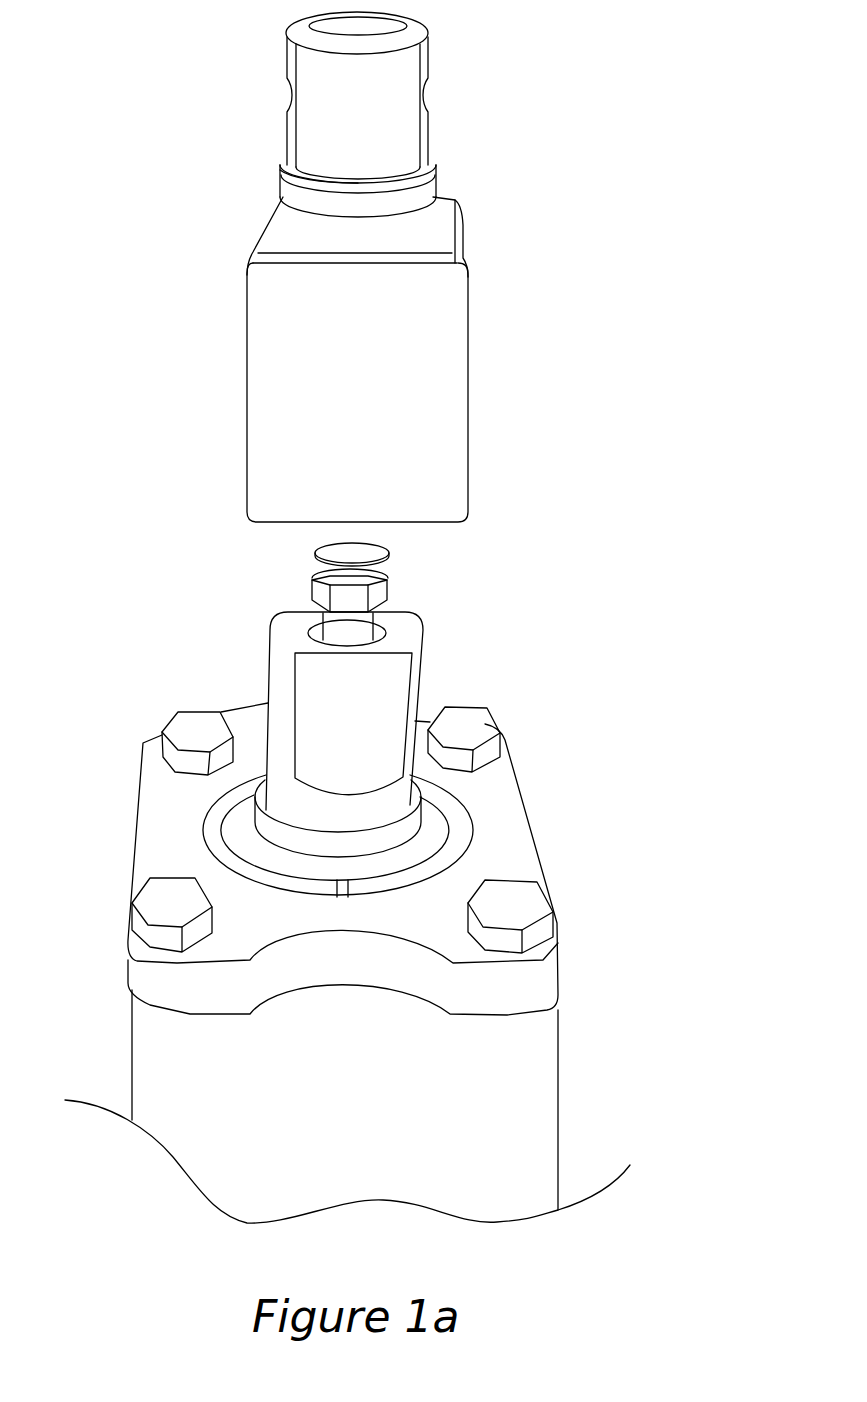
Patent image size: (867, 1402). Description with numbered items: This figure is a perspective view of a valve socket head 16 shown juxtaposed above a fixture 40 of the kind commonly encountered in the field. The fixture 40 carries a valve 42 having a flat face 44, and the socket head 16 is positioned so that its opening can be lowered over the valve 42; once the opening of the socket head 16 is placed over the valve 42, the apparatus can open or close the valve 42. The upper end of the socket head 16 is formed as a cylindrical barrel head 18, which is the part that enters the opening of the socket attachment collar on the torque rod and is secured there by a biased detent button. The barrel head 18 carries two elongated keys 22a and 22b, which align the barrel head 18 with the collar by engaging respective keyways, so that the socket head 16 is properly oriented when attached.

The valve socket head 16 is at (440, 410).
The cylindrical barrel head 18 is at (388, 98).
The elongated key 22a is at (430, 133).
The elongated key 22b is at (285, 133).
The fixture 40 is at (388, 883).
The valve 42 is at (382, 676).
The flat face 44 is at (368, 732).